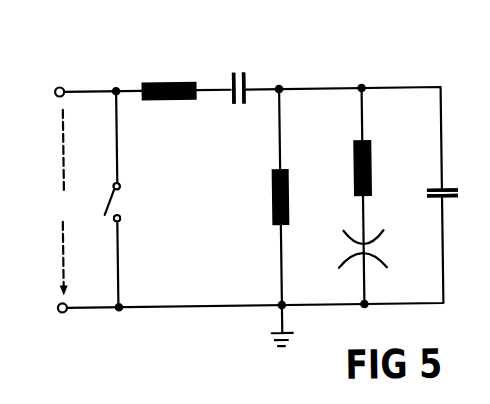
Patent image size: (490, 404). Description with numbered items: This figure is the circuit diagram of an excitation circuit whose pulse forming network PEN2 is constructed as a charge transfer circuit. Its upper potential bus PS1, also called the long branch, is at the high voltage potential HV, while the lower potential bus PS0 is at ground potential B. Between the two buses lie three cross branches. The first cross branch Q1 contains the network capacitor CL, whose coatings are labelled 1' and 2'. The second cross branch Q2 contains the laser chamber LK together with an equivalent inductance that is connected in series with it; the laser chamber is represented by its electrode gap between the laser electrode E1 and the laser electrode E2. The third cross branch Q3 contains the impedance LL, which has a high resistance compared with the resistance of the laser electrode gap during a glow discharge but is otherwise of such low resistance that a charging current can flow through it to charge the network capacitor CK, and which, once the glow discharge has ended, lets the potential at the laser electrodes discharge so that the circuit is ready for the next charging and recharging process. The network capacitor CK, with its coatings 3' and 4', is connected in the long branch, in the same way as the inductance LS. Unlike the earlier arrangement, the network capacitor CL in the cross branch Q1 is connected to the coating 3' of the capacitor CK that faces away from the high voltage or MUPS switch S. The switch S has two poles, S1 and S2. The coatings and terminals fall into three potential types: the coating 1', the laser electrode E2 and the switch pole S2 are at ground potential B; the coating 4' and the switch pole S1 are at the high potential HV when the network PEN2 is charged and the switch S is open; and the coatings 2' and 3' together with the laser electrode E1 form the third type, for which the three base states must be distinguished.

The high voltage potential HV is at (61, 203).
The MUPS switch S is at (109, 209).
The switch pole at high potential S1 is at (120, 181).
The switch pole at ground potential S2 is at (120, 216).
The inductance LS is at (171, 99).
The network capacitor CK is at (239, 69).
The capacitor coating 4' is at (224, 111).
The capacitor coating 3' is at (252, 110).
The pulse forming network PEN2 is at (328, 46).
The potential bus PS1 is at (401, 64).
The potential bus PS0 is at (164, 307).
The third cross branch Q3 is at (280, 147).
The impedance LL is at (272, 201).
The laser electrode E1 is at (343, 235).
The laser electrode E2 is at (350, 257).
The second cross branch Q2 is at (363, 119).
The laser chamber LK is at (372, 153).
The first cross branch Q1 is at (442, 120).
The network capacitor CL is at (427, 194).
The capacitor coating 2' is at (452, 172).
The capacitor coating 1' is at (446, 223).
The ground potential B is at (294, 333).